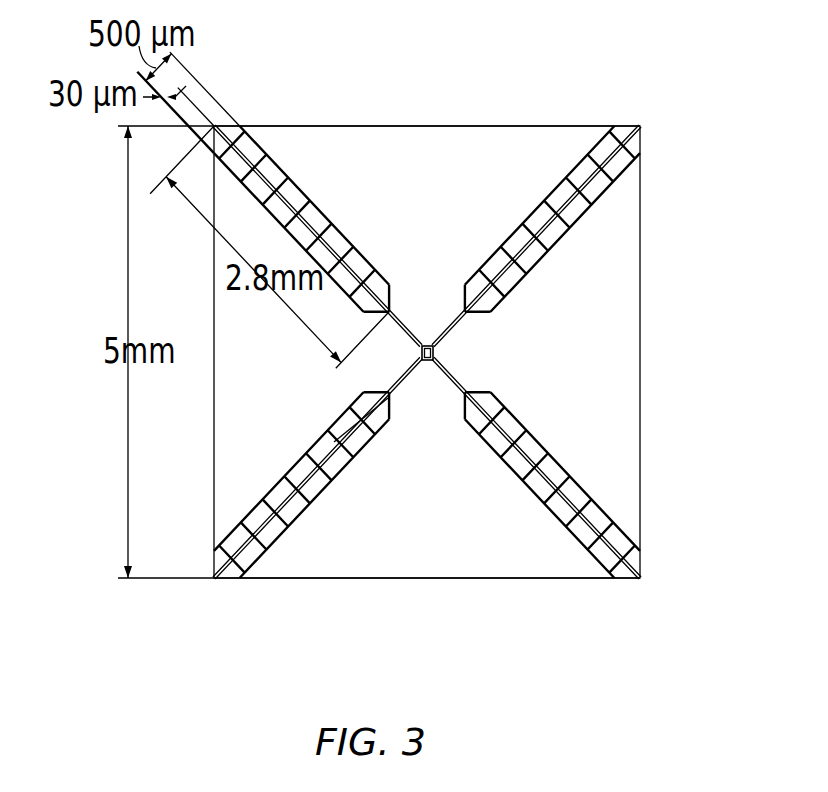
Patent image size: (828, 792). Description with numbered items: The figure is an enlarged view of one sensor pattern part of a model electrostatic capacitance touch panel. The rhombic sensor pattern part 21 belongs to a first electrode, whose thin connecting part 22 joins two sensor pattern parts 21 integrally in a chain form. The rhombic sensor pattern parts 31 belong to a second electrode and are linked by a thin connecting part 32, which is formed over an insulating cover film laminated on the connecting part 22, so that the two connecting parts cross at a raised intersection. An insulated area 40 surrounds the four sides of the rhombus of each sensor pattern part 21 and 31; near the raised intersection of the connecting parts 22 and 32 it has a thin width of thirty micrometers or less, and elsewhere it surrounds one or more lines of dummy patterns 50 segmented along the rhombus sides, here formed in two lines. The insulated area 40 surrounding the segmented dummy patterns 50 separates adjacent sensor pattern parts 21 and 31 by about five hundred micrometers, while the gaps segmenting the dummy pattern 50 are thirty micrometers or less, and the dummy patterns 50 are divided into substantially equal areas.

The sensor pattern part 21 is at (632, 327).
The connecting part 22 is at (436, 355).
The sensor pattern part 31 is at (453, 125).
The connecting part 32 is at (426, 343).
The insulated area 40 is at (585, 218).
The dummy pattern 50 is at (342, 197).